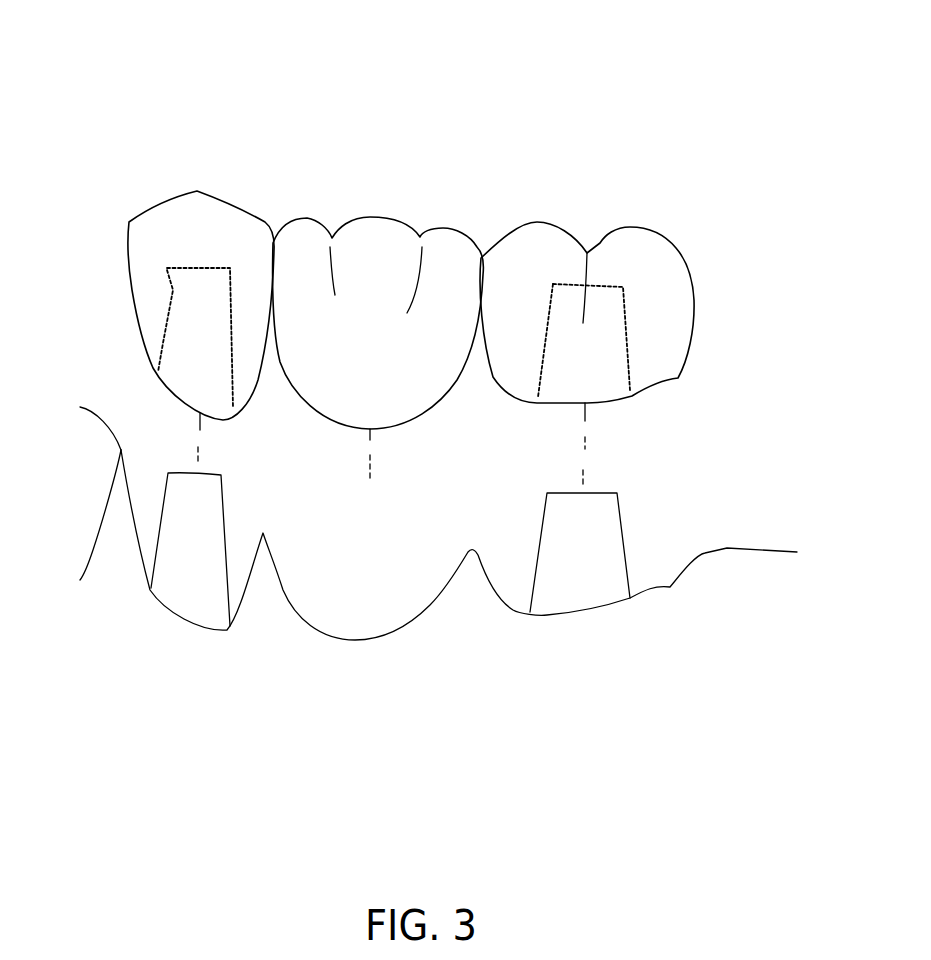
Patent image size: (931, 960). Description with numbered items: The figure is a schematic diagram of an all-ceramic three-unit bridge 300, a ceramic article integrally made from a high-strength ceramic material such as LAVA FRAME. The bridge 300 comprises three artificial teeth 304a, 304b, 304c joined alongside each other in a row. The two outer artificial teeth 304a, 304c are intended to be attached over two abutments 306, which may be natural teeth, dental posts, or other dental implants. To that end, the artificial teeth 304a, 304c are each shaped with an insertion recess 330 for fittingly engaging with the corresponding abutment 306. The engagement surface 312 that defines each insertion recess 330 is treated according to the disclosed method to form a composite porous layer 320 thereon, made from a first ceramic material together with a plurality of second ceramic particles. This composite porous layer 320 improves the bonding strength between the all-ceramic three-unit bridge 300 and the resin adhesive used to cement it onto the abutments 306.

The all-ceramic three-unit bridge 300 is at (70, 37).
The artificial tooth 304a is at (238, 225).
The artificial tooth 304b is at (372, 233).
The artificial tooth 304c is at (630, 243).
The abutment 306 is at (210, 535).
The engagement surface 312 is at (167, 298).
The composite porous layer 320 is at (155, 365).
The insertion recess 330 is at (173, 277).